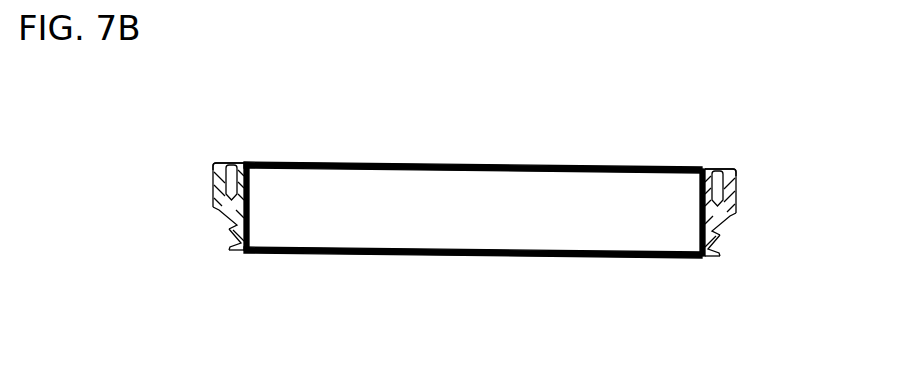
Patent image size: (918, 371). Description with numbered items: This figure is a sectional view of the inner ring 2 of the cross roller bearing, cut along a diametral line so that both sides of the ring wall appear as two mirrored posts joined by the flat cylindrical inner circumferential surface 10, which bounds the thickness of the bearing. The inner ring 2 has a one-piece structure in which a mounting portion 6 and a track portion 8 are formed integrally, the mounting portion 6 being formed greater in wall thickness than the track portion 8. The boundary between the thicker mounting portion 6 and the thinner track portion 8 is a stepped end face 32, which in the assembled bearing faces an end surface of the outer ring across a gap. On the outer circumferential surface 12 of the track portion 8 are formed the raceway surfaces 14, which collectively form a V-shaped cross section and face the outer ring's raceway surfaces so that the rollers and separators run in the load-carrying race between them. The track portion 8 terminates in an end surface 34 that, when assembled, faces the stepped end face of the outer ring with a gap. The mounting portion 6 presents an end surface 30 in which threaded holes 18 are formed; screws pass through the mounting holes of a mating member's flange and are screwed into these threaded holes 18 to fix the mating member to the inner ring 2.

The inner ring 2 is at (638, 163).
The mounting portion 6 is at (217, 166).
The track portion 8 is at (240, 246).
The inner circumferential surface 10 is at (250, 197).
The outer circumferential surface 12 is at (214, 185).
The raceway surface 14 is at (231, 235).
The threaded hole 18 is at (233, 163).
The end surface 30 is at (452, 164).
The stepped end face 32 is at (221, 212).
The end surface 34 is at (493, 256).